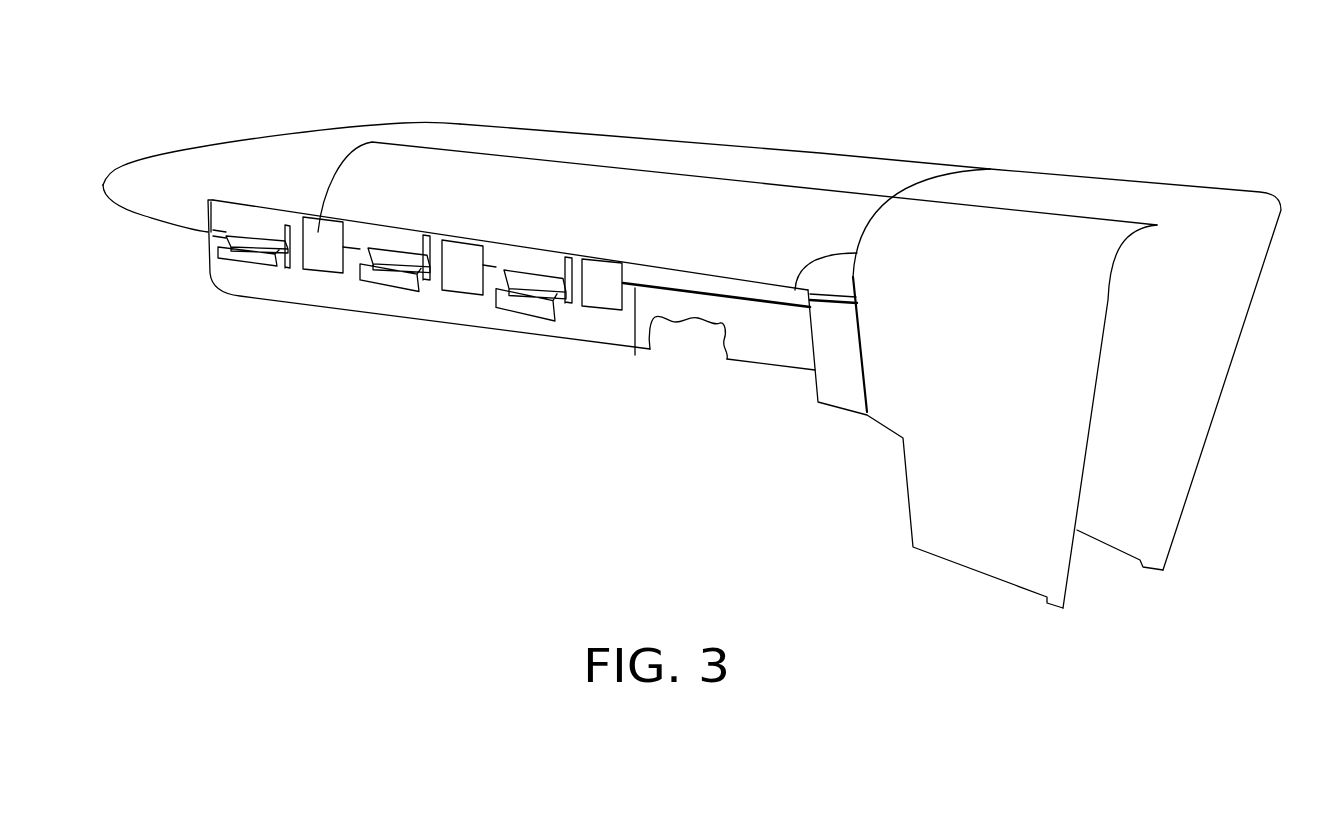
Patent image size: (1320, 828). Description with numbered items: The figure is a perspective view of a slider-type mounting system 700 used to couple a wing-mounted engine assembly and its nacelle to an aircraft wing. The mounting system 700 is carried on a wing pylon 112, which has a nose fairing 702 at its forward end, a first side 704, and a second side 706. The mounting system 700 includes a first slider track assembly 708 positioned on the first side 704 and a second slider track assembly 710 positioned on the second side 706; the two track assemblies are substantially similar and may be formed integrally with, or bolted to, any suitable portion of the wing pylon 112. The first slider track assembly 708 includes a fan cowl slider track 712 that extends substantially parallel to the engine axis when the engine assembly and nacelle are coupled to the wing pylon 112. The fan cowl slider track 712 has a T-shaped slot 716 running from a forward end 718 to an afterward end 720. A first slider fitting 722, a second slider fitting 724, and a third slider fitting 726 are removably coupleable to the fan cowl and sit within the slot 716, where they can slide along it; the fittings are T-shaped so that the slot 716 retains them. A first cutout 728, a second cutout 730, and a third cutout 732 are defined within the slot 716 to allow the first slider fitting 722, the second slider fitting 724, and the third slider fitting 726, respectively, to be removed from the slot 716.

The wing pylon 112 is at (963, 142).
The slider-type mounting system 700 is at (430, 400).
The nose fairing 702 is at (124, 160).
The first side 704 is at (957, 530).
The second side 706 is at (1150, 498).
The first slider track assembly 708 is at (402, 332).
The second slider track assembly 710 is at (688, 330).
The fan cowl slider track 712 is at (712, 268).
The T-shaped slot 716 is at (635, 355).
The forward end 718 is at (208, 231).
The afterward end 720 is at (857, 254).
The first slider fitting 722 is at (253, 235).
The second slider fitting 724 is at (390, 250).
The third slider fitting 726 is at (532, 265).
The first cutout 728 is at (327, 233).
The second cutout 730 is at (463, 263).
The third cutout 732 is at (610, 278).